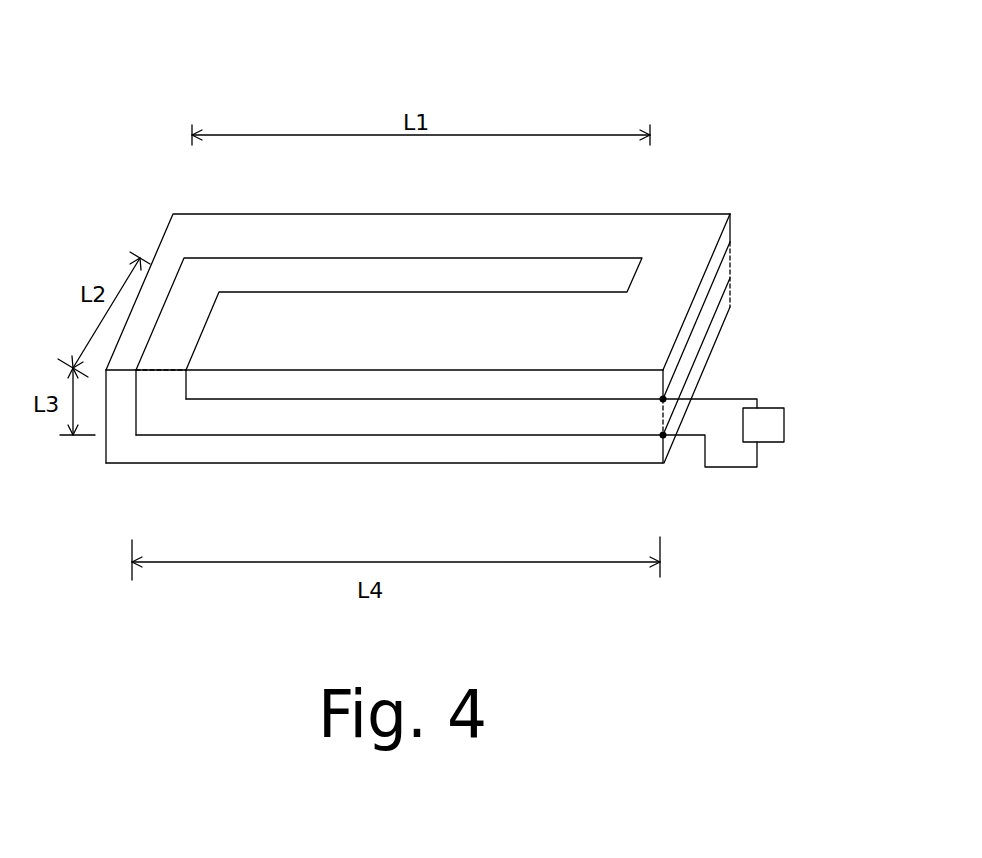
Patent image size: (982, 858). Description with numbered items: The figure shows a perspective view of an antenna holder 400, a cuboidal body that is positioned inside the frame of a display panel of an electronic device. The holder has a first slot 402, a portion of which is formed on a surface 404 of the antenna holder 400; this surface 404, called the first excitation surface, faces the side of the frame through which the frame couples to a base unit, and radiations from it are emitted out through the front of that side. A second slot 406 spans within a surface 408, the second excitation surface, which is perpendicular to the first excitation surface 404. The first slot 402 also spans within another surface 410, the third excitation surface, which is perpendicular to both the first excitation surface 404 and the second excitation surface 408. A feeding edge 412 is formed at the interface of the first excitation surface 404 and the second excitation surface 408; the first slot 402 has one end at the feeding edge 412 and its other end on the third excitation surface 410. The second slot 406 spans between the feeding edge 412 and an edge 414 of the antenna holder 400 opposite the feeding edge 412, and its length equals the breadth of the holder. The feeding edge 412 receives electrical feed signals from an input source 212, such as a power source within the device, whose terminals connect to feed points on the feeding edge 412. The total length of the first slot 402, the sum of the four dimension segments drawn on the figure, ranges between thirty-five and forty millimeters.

The antenna holder 400 is at (371, 86).
The third excitation surface 410 is at (672, 243).
The edge 414 is at (732, 237).
The second excitation surface 408 is at (682, 333).
The second slot 406 is at (680, 372).
The first slot 402 is at (355, 413).
The first excitation surface 404 is at (188, 442).
The feeding edge 412 is at (665, 440).
The input source 212 is at (770, 425).